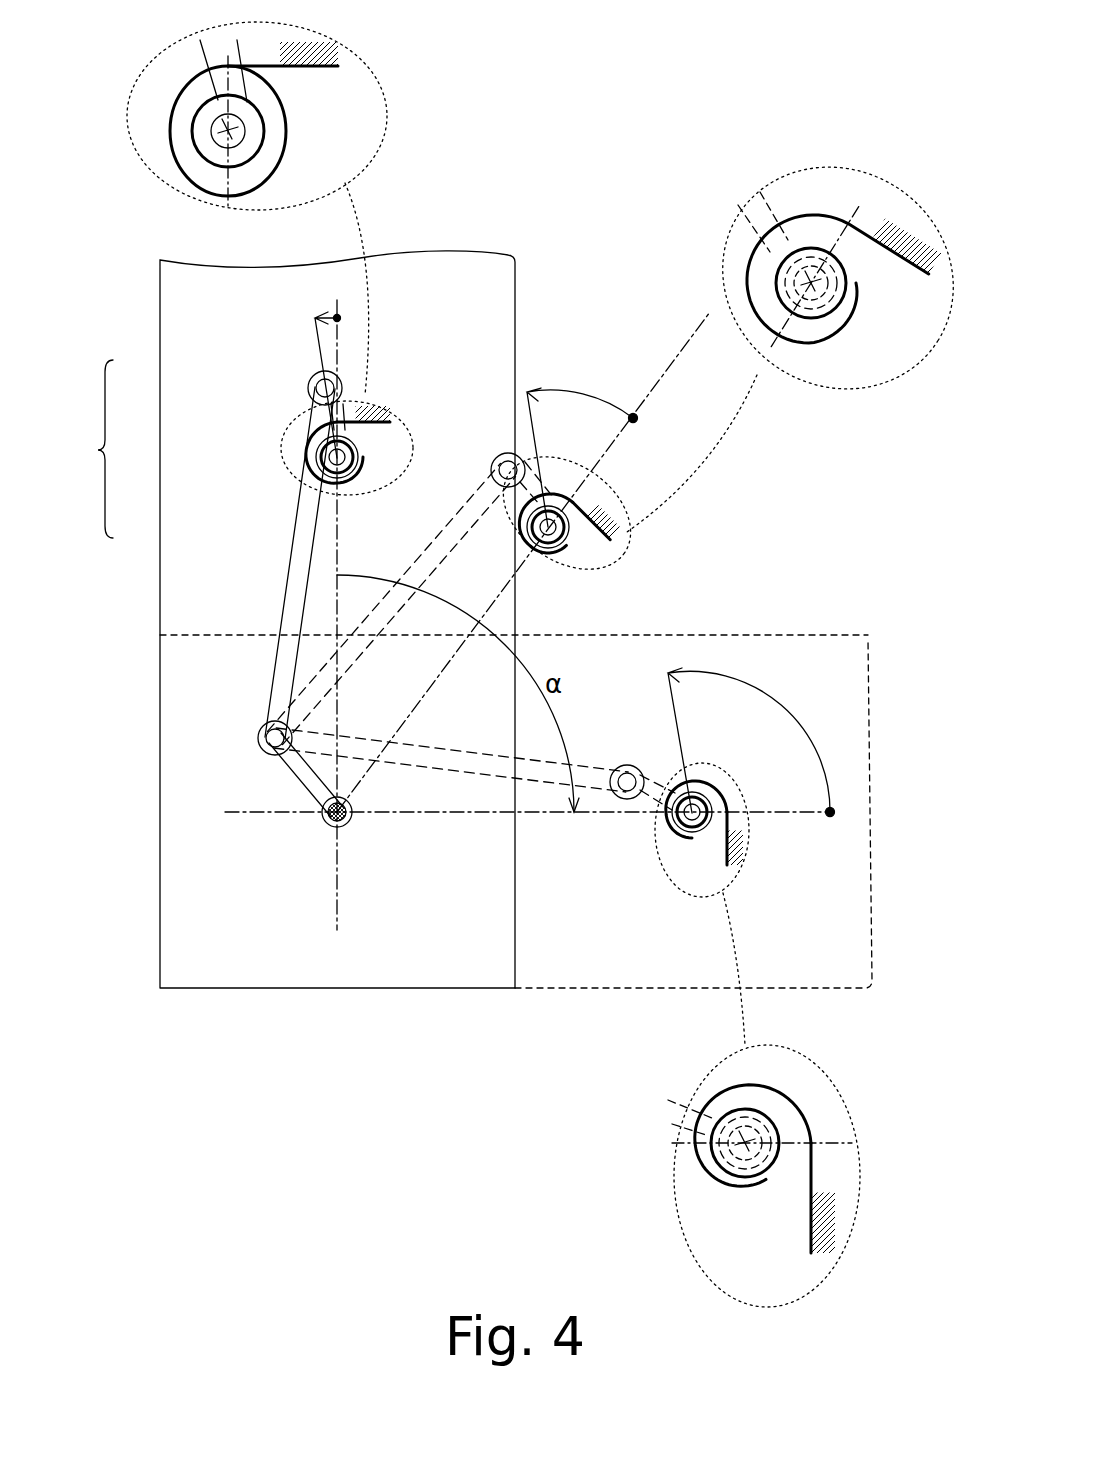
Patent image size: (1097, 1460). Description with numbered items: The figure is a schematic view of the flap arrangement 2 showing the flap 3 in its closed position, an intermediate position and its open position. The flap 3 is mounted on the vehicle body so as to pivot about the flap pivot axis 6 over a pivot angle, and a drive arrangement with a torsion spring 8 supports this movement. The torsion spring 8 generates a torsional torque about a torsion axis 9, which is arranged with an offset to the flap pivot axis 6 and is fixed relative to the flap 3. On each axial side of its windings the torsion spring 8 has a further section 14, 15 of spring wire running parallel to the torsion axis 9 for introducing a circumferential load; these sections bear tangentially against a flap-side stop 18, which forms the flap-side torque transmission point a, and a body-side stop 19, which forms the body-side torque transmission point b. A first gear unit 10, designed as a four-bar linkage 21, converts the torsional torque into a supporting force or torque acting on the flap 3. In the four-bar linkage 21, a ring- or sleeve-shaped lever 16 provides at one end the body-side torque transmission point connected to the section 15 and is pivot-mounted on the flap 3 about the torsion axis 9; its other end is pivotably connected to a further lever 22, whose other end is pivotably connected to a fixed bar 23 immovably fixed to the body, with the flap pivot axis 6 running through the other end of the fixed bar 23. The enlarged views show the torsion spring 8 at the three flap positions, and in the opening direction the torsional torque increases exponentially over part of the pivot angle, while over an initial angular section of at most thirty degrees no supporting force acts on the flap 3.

The flap arrangement 2 is at (132, 1040).
The flap 3 is at (172, 295).
The flap pivot axis 6 is at (320, 826).
The torsion spring 8 is at (290, 125).
The torsion axis 9 is at (262, 165).
The first gear unit 10 is at (205, 348).
The further section 14 is at (210, 146).
The further section 15 is at (345, 86).
The lever 16 is at (317, 417).
The flap-side stop 18 is at (216, 103).
The body-side stop 19 is at (360, 62).
The four-bar linkage 21 is at (90, 449).
The further lever 22 is at (298, 520).
The fixed bar 23 is at (292, 772).